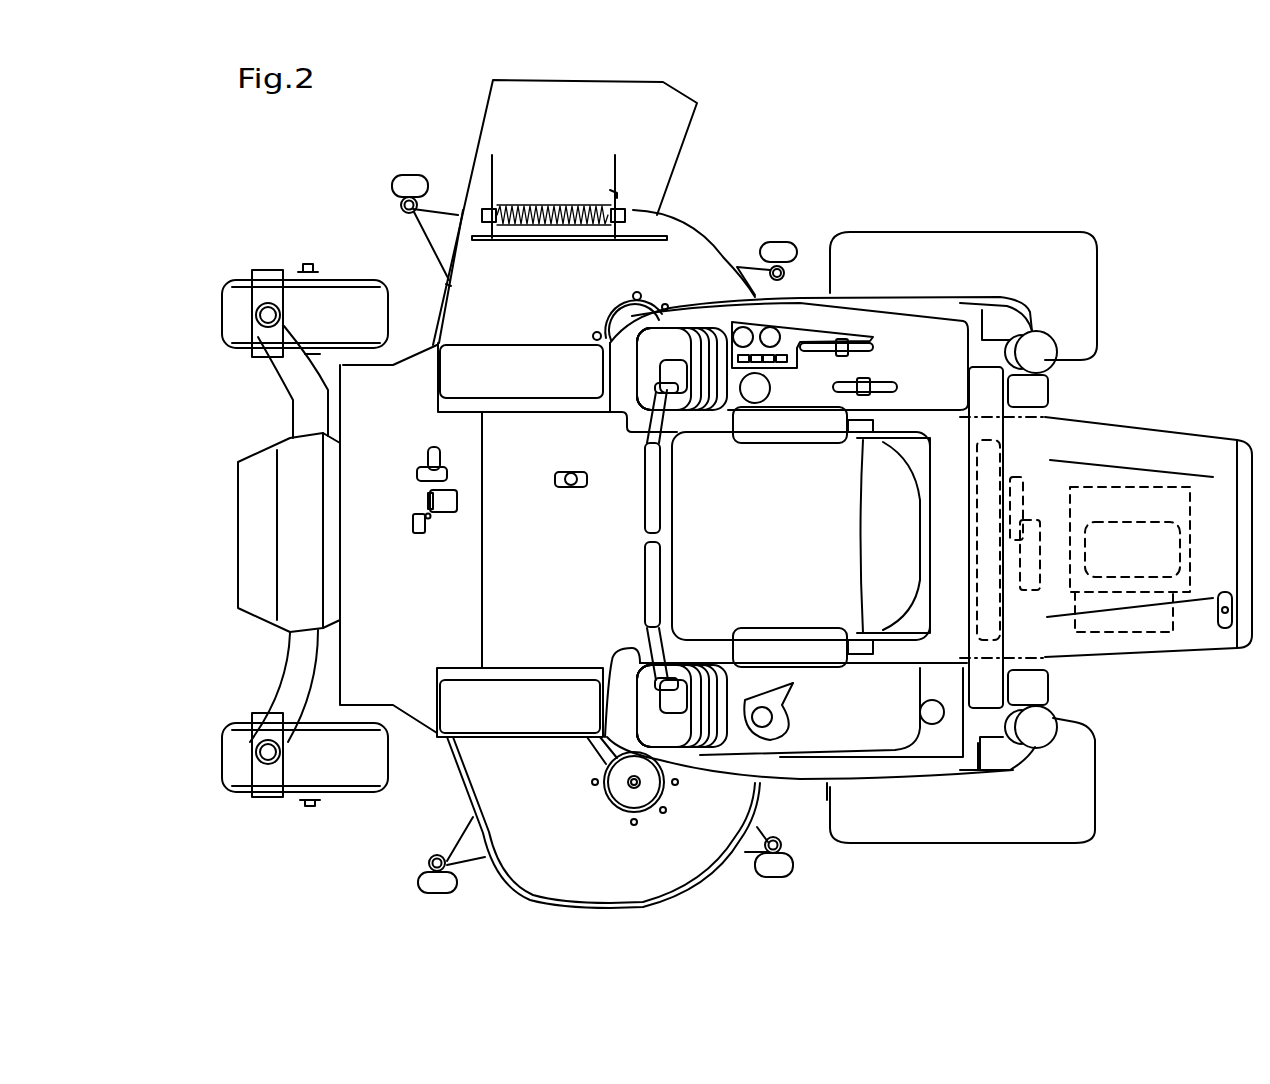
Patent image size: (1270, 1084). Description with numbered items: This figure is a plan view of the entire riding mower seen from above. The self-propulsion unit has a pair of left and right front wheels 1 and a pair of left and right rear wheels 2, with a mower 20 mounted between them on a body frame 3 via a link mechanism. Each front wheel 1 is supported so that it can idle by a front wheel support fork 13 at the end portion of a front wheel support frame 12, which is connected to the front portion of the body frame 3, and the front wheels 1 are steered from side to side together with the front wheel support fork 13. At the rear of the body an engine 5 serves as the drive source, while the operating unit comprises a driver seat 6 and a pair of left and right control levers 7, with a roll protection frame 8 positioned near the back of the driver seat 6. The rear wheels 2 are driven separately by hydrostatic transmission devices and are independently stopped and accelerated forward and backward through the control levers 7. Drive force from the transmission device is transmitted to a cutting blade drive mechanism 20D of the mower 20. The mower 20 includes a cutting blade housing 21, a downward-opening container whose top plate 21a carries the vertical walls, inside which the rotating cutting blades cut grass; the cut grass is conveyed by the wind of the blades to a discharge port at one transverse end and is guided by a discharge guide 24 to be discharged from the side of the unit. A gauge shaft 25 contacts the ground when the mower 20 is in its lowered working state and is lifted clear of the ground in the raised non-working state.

The front wheels 1 is at (224, 316).
The rear wheels 2 is at (1087, 295).
The body frame 3 is at (413, 698).
The engine 5 is at (1141, 495).
The driver seat 6 is at (888, 457).
The control levers 7 is at (653, 564).
The roll protection frame 8 is at (990, 707).
The front wheel support frame 12 is at (300, 650).
The front wheel support fork 13 is at (290, 270).
The mower 20 is at (562, 845).
The cutting blade drive mechanism 20D is at (586, 771).
The cutting blade housing 21 is at (632, 915).
The top plate 21a is at (678, 880).
The discharge guide 24 is at (667, 163).
The gauge shaft 25 is at (403, 172).